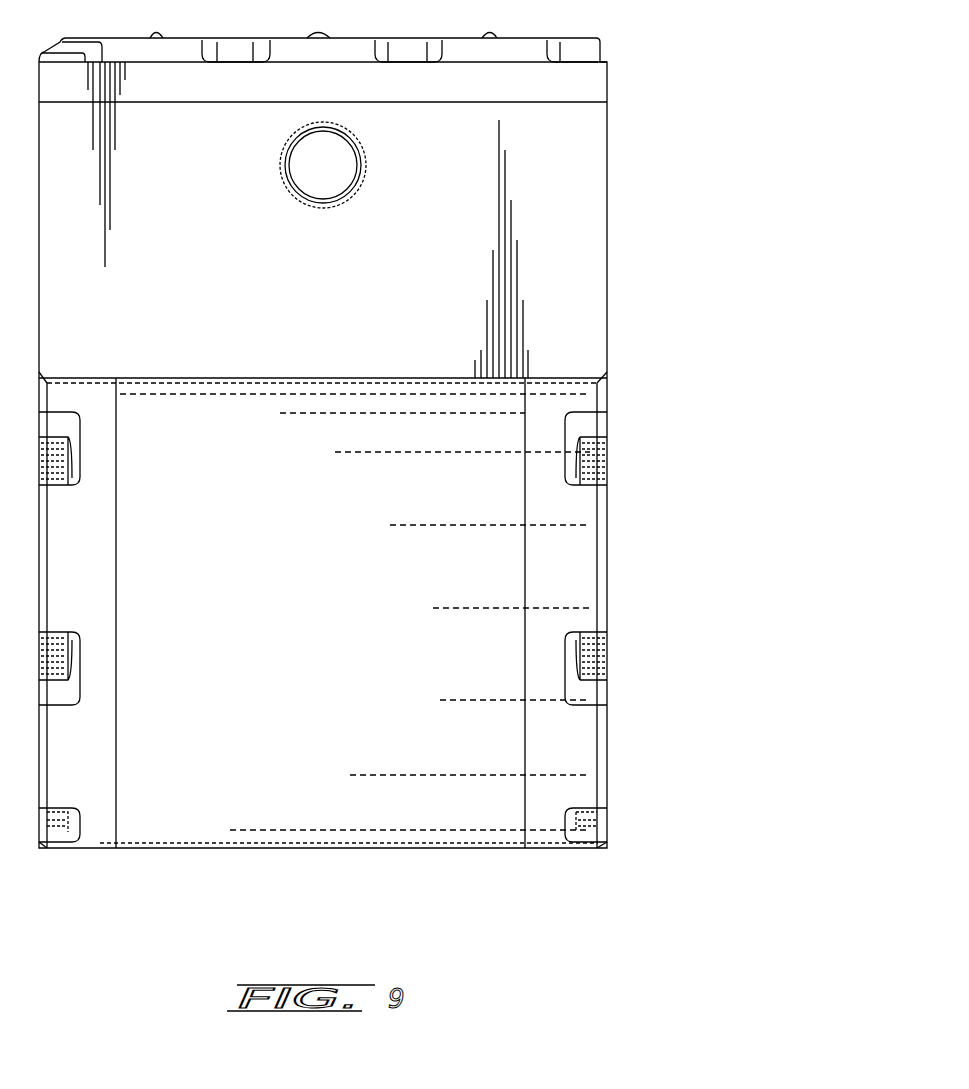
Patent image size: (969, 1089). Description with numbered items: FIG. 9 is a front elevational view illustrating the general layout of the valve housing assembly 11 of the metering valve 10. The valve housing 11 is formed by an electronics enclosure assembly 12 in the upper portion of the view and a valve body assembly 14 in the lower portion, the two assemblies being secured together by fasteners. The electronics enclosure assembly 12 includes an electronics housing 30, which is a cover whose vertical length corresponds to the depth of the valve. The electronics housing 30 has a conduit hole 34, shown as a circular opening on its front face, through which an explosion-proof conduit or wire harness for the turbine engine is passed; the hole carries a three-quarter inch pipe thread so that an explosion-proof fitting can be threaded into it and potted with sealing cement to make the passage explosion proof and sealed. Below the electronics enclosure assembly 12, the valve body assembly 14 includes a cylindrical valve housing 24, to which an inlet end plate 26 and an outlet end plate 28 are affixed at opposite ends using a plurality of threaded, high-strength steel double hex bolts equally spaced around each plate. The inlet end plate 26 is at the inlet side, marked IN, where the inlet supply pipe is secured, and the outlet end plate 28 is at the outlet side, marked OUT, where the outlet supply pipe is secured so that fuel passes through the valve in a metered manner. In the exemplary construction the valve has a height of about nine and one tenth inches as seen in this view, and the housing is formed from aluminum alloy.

The metering valve 10 is at (700, 122).
The valve housing 11 is at (642, 354).
The electronics enclosure assembly 12 is at (632, 210).
The valve body assembly 14 is at (636, 585).
The cylindrical valve housing 24 is at (326, 702).
The inlet end plate 26 is at (75, 850).
The outlet end plate 28 is at (548, 850).
The electronics housing 30 is at (461, 313).
The conduit hole 34 is at (318, 206).